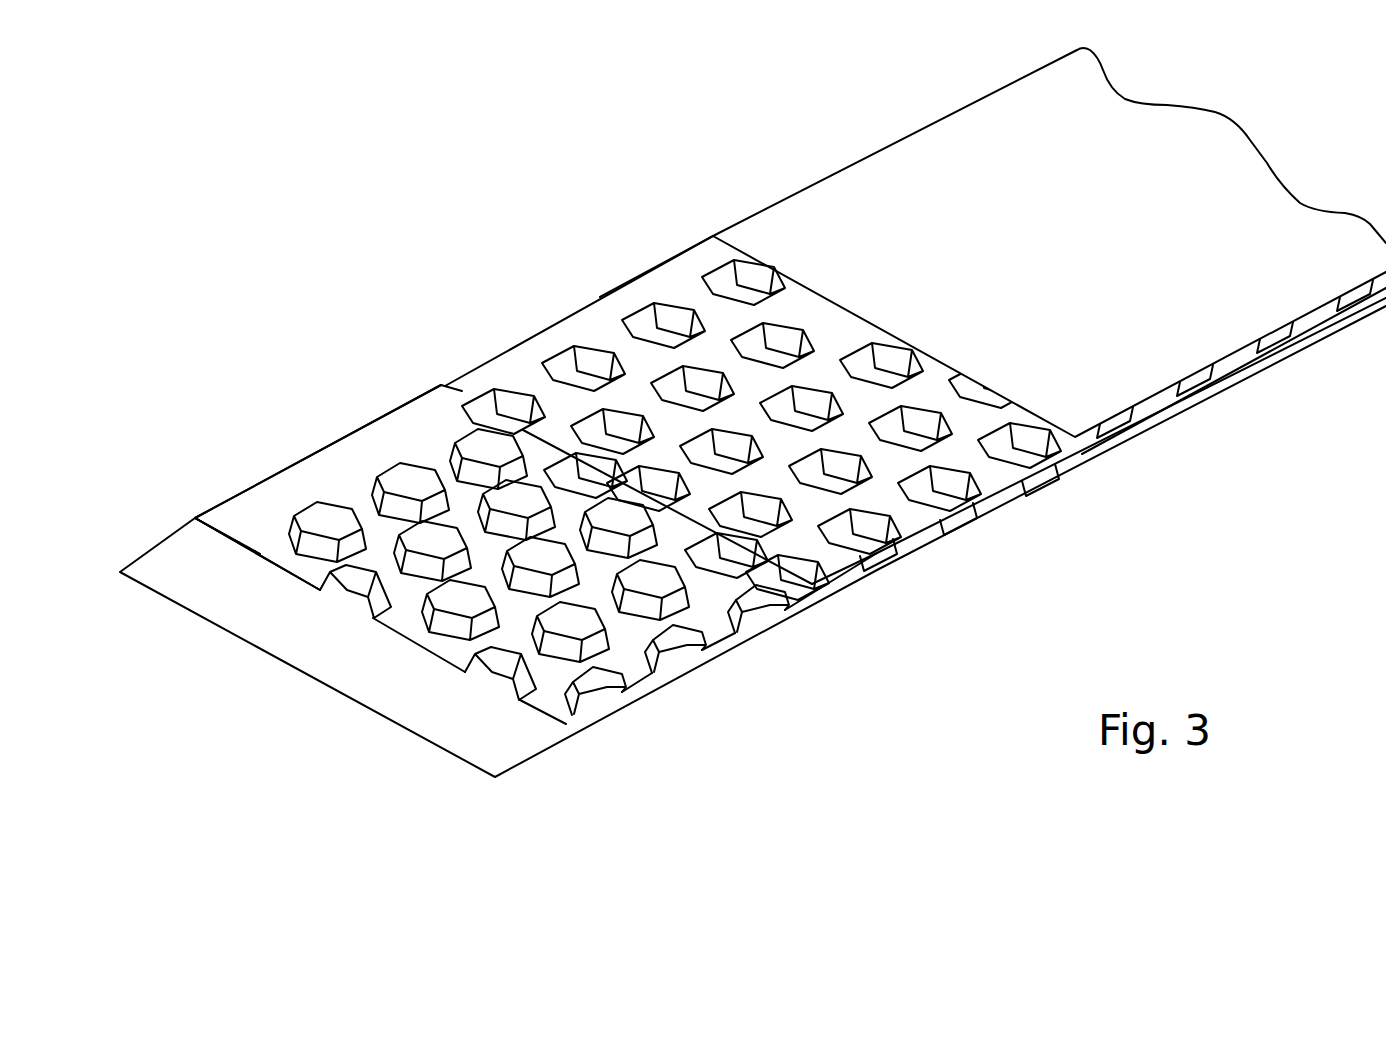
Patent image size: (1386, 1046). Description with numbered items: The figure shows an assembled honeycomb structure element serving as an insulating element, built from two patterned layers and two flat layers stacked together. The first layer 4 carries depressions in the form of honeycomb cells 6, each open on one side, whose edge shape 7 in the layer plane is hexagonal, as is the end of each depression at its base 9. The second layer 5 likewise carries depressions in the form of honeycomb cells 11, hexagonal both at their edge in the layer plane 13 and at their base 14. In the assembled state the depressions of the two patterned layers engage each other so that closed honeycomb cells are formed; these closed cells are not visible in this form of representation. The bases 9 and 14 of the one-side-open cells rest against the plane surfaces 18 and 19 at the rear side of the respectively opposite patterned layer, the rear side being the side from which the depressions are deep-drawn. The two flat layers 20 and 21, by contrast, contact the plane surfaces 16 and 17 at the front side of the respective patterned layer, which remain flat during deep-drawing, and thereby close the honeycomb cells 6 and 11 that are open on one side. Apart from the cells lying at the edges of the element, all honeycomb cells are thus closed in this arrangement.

The first layer 4 is at (565, 322).
The second layer 5 is at (525, 375).
The honeycomb cell 6 is at (650, 318).
The edge shape 7 is at (1033, 463).
The base 9 is at (1122, 435).
The honeycomb cell 11 is at (410, 480).
The layer plane 13 is at (300, 495).
The base 14 is at (575, 620).
The plane surface 16 is at (685, 293).
The plane surface 17 is at (242, 553).
The plane surface 18 is at (838, 582).
The plane surface 19 is at (254, 533).
The flat layer 20 is at (953, 167).
The flat layer 21 is at (478, 725).